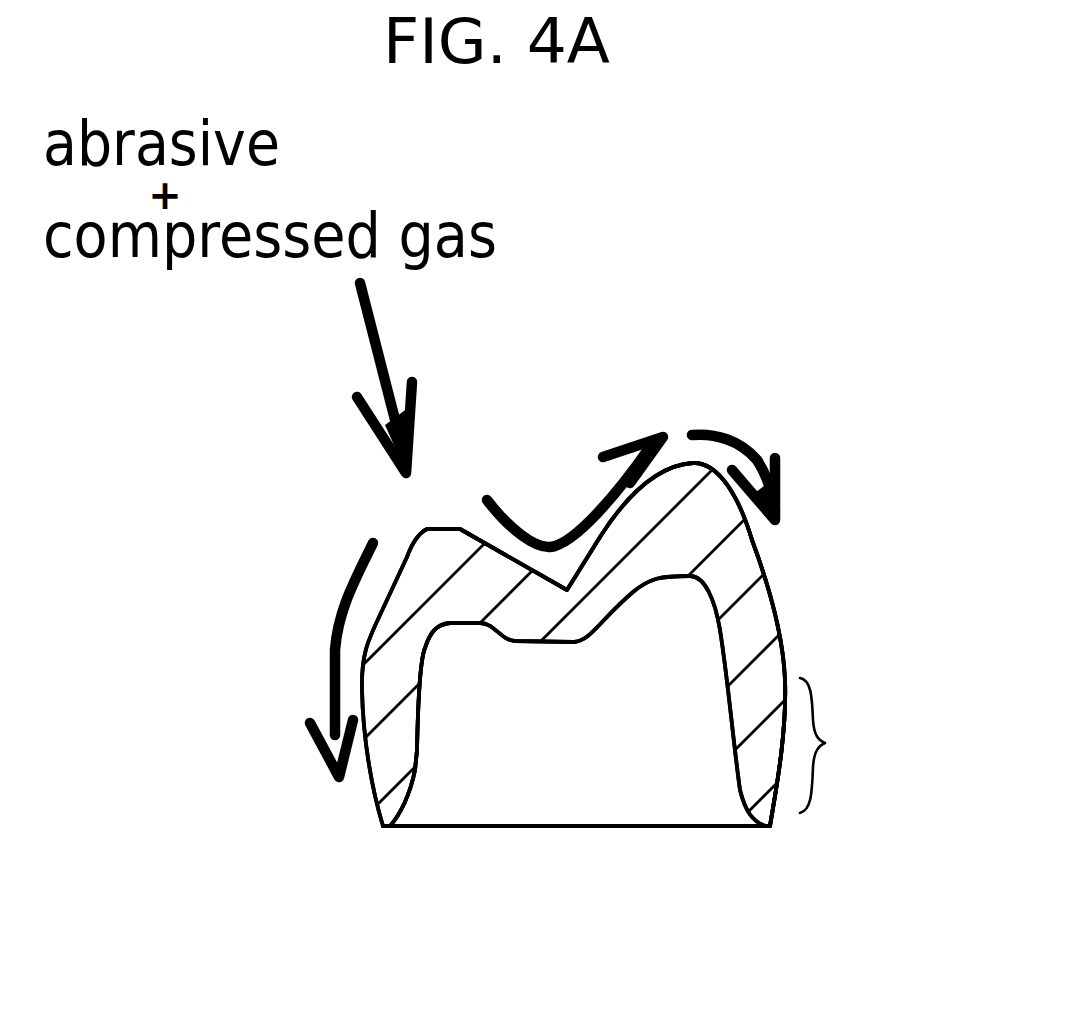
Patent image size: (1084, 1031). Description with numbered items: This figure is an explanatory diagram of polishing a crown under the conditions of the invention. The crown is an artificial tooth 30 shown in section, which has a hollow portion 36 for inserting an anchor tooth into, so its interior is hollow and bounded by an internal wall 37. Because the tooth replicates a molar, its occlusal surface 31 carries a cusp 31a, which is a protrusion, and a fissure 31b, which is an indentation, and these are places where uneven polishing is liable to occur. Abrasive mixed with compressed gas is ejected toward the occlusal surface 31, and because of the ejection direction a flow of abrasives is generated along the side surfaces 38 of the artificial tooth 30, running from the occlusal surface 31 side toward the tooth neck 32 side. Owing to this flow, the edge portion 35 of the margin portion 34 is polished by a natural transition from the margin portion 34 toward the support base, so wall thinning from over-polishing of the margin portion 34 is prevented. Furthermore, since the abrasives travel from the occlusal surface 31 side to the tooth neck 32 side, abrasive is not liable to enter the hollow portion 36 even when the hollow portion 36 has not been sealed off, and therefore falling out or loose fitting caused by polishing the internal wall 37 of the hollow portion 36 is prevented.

The artificial tooth 30 is at (780, 605).
The occlusal surface 31 is at (552, 473).
The cusp 31a is at (682, 462).
The fissure 31b is at (570, 587).
The tooth neck 32 is at (580, 847).
The margin portion 34 is at (821, 683).
The edge portion 35 is at (768, 828).
The hollow portion 36 is at (662, 763).
The internal wall 37 is at (420, 748).
The side surfaces 38 is at (362, 700).